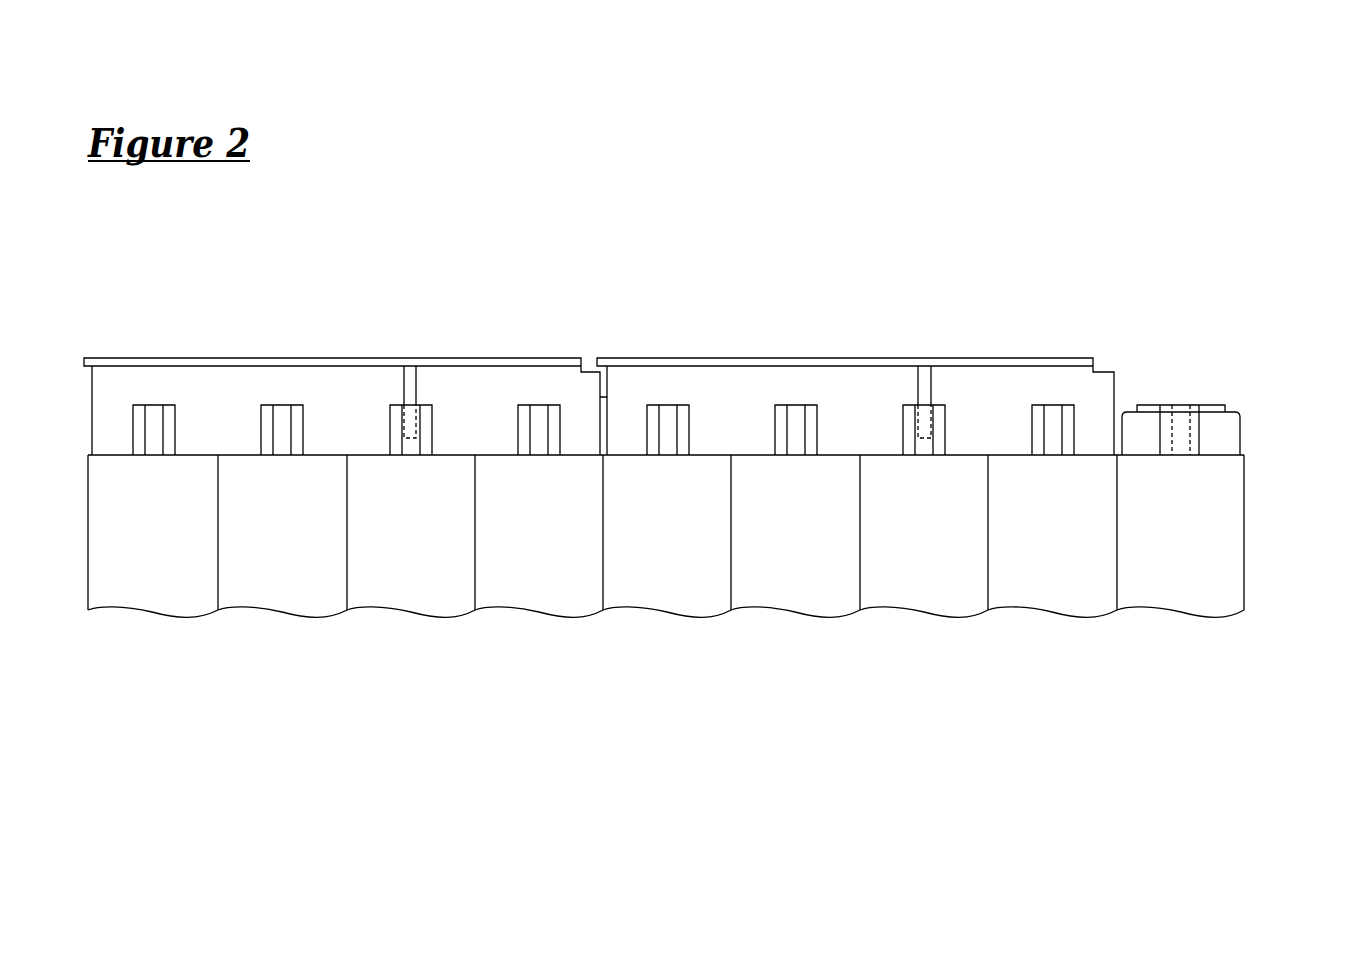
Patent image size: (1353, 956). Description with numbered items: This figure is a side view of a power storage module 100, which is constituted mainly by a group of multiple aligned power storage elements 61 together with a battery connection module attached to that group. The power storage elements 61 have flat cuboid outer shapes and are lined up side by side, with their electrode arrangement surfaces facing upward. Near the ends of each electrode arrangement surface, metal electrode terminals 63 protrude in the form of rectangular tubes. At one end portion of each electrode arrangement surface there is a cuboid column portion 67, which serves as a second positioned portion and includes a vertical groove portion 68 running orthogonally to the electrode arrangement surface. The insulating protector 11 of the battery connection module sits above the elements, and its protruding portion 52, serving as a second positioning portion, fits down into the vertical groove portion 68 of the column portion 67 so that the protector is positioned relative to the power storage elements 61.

The power storage module 100 is at (704, 245).
The insulating protector 11 is at (550, 358).
The protruding portion 52 is at (417, 383).
The column portion 67 is at (155, 405).
The vertical groove portion 68 is at (905, 415).
The electrode terminal 63 is at (1233, 430).
The power storage element 61 is at (1217, 547).